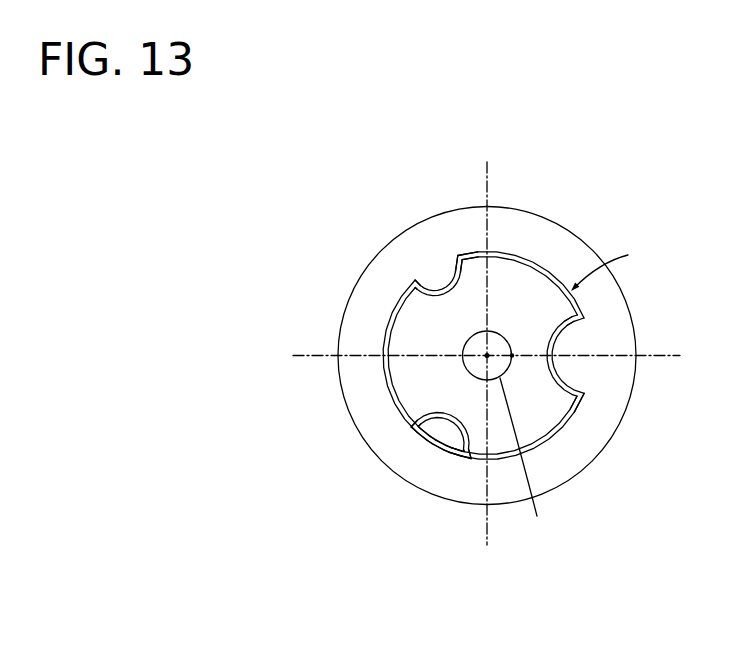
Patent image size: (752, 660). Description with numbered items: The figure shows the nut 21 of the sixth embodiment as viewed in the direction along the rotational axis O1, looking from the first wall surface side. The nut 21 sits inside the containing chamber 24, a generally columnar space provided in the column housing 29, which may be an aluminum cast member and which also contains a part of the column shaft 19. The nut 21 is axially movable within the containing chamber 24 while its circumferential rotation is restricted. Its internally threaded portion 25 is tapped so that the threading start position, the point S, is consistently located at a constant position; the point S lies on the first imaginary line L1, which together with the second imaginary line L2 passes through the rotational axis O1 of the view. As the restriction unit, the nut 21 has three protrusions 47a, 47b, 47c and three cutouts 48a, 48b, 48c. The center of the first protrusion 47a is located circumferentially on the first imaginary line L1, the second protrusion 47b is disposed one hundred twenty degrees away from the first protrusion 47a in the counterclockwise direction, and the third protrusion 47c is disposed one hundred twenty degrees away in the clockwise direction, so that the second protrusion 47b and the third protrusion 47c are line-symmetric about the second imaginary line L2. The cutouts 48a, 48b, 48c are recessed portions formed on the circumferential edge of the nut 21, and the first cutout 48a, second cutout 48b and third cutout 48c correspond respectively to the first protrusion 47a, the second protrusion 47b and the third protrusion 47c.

The column shaft 19 is at (467, 364).
The nut 21 is at (613, 266).
The containing chamber 24 is at (530, 263).
The internally threaded portion 25 is at (458, 350).
The column housing 29 is at (576, 250).
The first protrusion 47a is at (566, 375).
The second protrusion 47b is at (403, 412).
The third protrusion 47c is at (405, 293).
The first cutout 48a is at (556, 335).
The second cutout 48b is at (444, 426).
The third cutout 48c is at (433, 288).
The rotational axis O1 is at (484, 351).
The point S is at (522, 464).
The first imaginary line L1 is at (318, 356).
The second imaginary line L2 is at (490, 172).